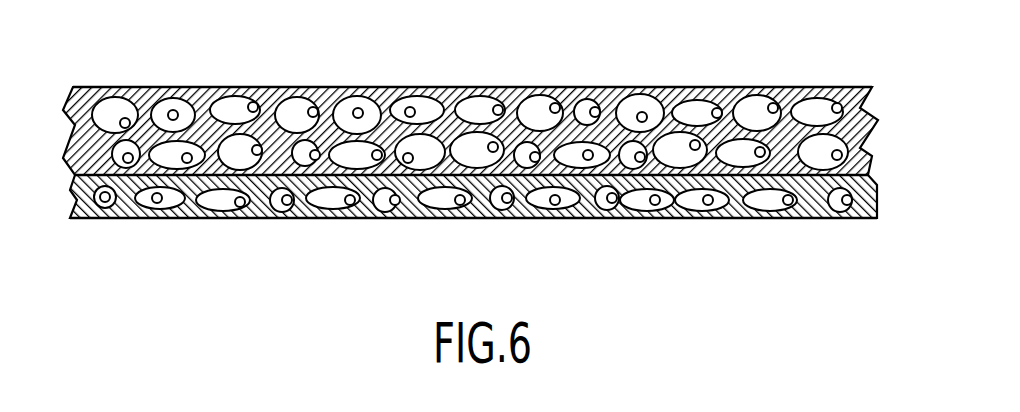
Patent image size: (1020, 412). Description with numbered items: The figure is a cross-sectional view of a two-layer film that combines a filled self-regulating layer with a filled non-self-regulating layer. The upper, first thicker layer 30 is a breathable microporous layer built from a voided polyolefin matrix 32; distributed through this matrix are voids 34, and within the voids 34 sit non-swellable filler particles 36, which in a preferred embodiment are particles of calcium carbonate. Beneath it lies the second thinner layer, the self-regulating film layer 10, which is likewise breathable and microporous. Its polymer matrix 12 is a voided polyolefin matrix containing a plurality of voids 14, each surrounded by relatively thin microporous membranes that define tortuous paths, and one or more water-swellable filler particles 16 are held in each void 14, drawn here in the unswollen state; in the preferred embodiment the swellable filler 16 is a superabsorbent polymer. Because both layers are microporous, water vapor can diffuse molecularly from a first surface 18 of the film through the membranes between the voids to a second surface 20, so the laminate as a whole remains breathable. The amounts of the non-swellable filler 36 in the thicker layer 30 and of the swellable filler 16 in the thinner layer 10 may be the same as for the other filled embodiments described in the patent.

The self-regulating film layer 10 is at (489, 153).
The polymer matrix 12 is at (473, 231).
The voids 14 is at (530, 207).
The water-swellable filler particles 16 is at (556, 207).
The first surface 18 is at (170, 87).
The second surface 20 is at (261, 220).
The first thicker layer 30 is at (489, 96).
The voided polyolefin matrix 32 is at (708, 92).
The voids 34 is at (614, 102).
The non-swellable filler particles 36 is at (641, 111).